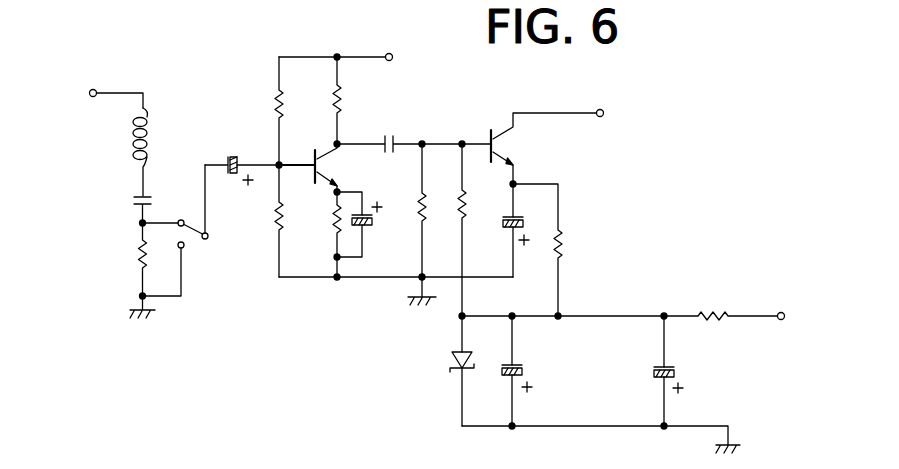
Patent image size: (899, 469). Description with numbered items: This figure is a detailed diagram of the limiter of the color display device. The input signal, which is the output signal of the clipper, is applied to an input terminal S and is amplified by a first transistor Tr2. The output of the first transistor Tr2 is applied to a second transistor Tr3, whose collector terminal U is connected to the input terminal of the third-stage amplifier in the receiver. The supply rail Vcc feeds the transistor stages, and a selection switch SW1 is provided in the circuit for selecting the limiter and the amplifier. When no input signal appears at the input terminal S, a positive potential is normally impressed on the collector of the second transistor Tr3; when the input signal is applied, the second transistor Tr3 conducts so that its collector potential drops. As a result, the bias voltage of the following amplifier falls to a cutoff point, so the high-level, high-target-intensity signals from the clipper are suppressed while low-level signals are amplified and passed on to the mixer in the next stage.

The input terminal S is at (104, 94).
The selection switch SW1 is at (189, 230).
The supply voltage terminal Vcc is at (359, 57).
The first transistor Tr2 is at (328, 168).
The second transistor Tr3 is at (544, 148).
The collector terminal U is at (611, 115).